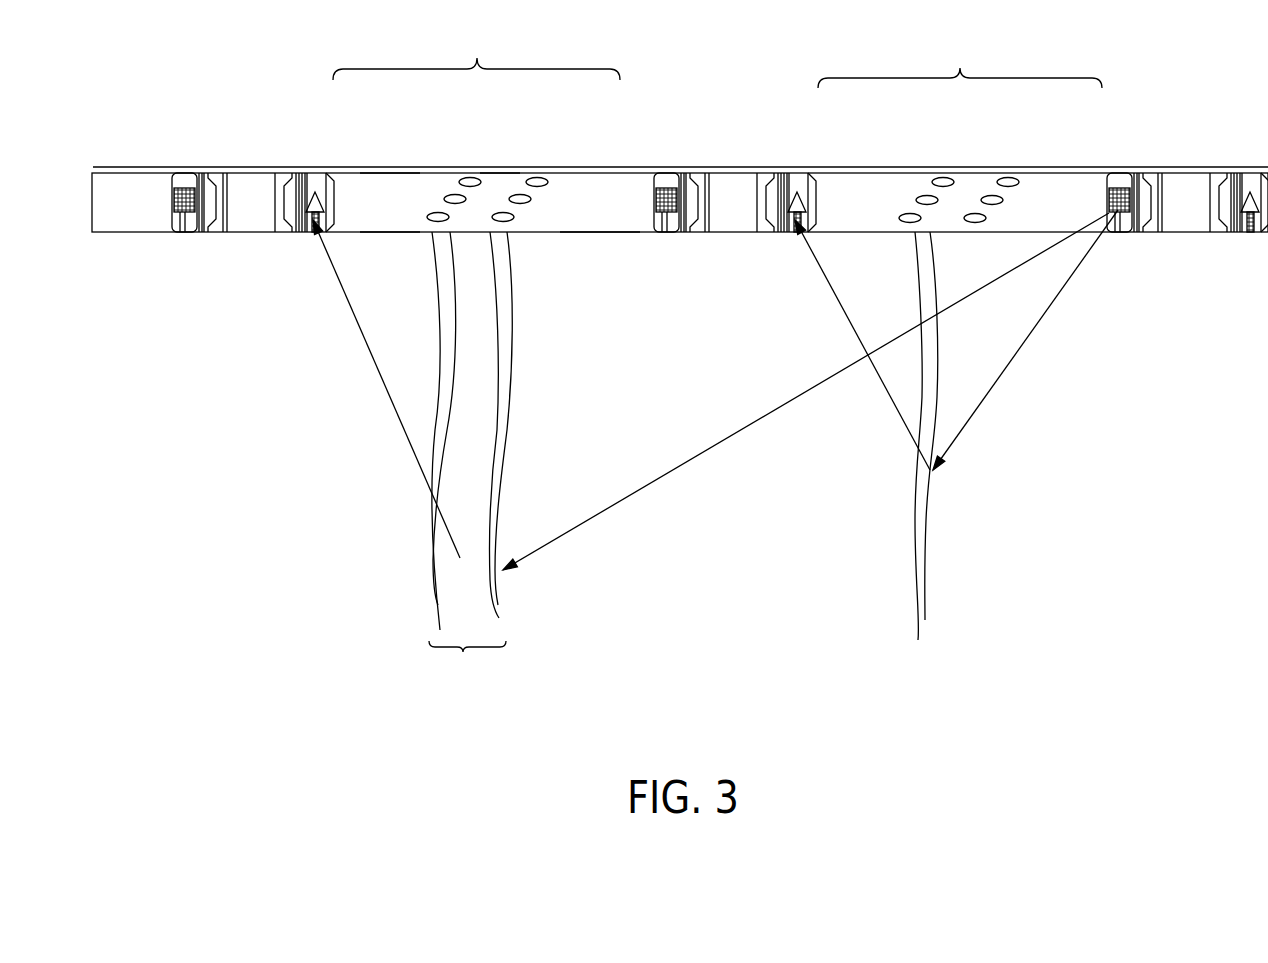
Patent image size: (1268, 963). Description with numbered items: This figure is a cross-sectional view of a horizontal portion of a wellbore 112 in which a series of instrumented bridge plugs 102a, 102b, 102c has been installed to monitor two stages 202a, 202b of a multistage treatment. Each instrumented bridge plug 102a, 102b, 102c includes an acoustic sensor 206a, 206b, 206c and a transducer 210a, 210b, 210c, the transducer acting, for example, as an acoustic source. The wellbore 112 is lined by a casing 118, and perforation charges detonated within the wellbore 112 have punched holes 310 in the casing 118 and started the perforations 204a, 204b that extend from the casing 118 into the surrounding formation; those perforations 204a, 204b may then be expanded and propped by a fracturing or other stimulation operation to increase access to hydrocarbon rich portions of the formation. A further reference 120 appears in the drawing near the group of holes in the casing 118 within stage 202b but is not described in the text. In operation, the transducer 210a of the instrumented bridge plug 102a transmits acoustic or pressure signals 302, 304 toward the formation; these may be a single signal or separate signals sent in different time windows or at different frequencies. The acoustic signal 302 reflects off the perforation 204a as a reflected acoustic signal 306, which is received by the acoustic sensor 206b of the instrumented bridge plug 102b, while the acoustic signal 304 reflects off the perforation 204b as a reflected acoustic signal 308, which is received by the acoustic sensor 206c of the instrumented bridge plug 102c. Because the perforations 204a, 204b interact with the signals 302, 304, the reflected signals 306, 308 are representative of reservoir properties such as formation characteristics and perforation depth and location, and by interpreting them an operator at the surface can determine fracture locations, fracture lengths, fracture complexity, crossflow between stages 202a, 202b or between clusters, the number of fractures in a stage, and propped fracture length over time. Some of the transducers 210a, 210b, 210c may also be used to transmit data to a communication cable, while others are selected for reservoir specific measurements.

The instrumented bridge plug 102a is at (1184, 190).
The instrumented bridge plug 102b is at (744, 190).
The instrumented bridge plug 102c is at (262, 190).
The wellbore 112 is at (588, 212).
The casing 118 is at (386, 173).
The holes 120 is at (462, 178).
The stage 202a is at (960, 59).
The stage 202b is at (476, 49).
The perforation 204a is at (926, 566).
The perforation 204b is at (470, 461).
The acoustic sensor 206a is at (1246, 198).
The acoustic sensor 206b is at (794, 196).
The acoustic sensor 206c is at (312, 196).
The transducer 210a is at (1116, 188).
The transducer 210b is at (666, 188).
The transducer 210c is at (184, 188).
The acoustic signal 302 is at (1030, 337).
The acoustic signal 304 is at (690, 460).
The reflected acoustic signal 306 is at (832, 290).
The reflected acoustic signal 308 is at (389, 396).
The holes 310 is at (540, 165).